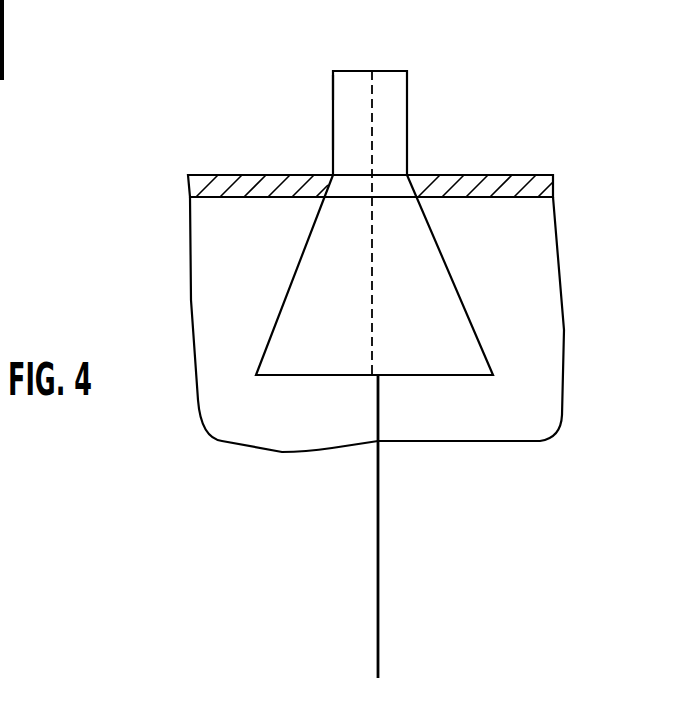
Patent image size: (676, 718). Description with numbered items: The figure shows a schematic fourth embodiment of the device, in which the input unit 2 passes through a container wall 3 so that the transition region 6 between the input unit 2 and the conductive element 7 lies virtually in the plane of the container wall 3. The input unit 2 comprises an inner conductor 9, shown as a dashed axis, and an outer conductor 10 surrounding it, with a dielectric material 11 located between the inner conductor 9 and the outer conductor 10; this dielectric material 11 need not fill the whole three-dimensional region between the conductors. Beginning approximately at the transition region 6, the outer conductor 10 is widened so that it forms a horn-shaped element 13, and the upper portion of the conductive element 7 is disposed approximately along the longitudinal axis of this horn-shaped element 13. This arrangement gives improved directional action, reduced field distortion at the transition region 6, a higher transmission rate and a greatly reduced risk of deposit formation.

The input unit 2 is at (387, 80).
The container wall 3 is at (497, 180).
The transition region 6 is at (353, 177).
The conductive element 7 is at (380, 593).
The inner conductor 9 is at (383, 126).
The outer conductor 10 is at (333, 136).
The dielectric material 11 is at (350, 90).
The horn-shaped element 13 is at (302, 294).